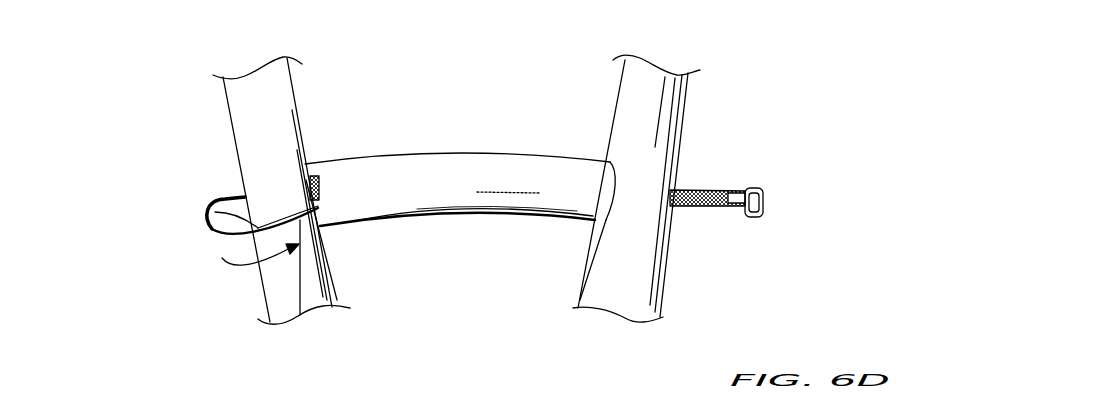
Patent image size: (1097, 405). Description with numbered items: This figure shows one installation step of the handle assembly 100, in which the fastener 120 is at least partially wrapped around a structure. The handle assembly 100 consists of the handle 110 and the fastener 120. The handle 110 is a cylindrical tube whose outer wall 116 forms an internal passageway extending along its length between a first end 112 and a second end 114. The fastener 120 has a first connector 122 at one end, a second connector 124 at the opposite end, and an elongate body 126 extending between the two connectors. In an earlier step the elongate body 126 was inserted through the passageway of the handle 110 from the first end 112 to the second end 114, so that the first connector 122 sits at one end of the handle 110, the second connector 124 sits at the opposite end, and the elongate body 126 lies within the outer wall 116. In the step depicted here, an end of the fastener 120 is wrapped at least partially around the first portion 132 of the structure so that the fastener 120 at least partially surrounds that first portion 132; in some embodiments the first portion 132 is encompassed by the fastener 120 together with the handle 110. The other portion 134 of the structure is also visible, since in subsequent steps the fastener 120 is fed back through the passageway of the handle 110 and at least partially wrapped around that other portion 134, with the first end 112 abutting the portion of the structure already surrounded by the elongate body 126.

The handle assembly 100 is at (168, 175).
The handle 110 is at (435, 142).
The first end 112 is at (318, 197).
The second end 114 is at (608, 198).
The outer wall 116 is at (498, 188).
The fastener 120 is at (732, 235).
The first connector 122 is at (752, 188).
The second connector 124 is at (308, 213).
The elongate body 126 is at (222, 238).
The first portion 132 is at (278, 147).
The other portion 134 is at (635, 232).